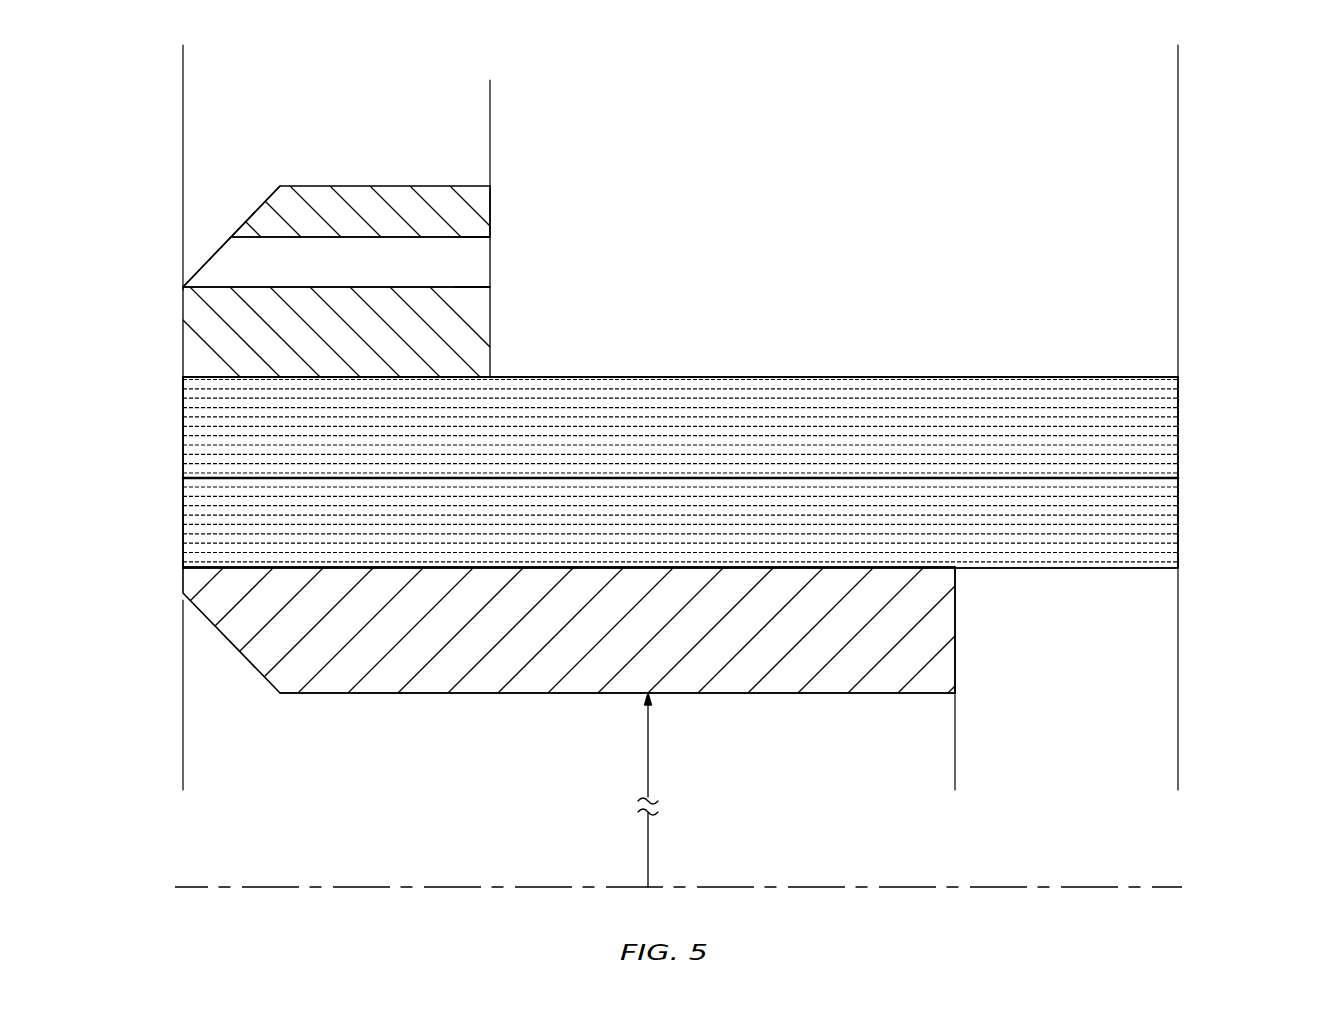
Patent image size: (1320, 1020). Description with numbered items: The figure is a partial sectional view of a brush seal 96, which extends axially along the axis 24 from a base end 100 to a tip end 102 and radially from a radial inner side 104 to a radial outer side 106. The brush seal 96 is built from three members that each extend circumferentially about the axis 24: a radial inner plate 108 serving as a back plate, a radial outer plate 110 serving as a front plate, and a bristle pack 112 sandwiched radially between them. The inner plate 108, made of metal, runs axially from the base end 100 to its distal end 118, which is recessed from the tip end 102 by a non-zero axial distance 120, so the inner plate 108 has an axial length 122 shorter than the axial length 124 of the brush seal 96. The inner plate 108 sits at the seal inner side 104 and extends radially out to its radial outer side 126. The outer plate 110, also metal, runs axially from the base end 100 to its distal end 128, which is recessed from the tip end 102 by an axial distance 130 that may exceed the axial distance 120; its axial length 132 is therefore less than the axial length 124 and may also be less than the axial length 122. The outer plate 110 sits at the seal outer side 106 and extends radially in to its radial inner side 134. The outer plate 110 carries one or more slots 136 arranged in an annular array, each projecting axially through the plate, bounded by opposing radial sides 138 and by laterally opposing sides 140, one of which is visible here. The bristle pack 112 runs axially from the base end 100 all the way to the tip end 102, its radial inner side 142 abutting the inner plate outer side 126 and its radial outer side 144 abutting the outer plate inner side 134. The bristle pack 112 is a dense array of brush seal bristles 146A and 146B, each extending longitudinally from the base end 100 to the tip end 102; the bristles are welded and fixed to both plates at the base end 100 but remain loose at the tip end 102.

The axis 24 is at (275, 882).
The brush seal 96 is at (946, 278).
The base end 100 is at (183, 418).
The tip end 102 is at (1178, 410).
The radial inner side 104 is at (348, 693).
The radial outer side 106 is at (388, 186).
The radial inner plate 108 is at (540, 641).
The radial outer plate 110 is at (310, 346).
The bristle pack 112 is at (701, 481).
The distal end of the inner plate 118 is at (955, 685).
The axial distance 120 is at (955, 775).
The axial length of the inner plate 122 is at (183, 775).
The axial length of the brush seal 124 is at (1178, 53).
The radial outer side of the inner plate 126 is at (200, 565).
The distal end of the outer plate 128 is at (490, 212).
The axial distance 130 is at (1178, 88).
The axial length of the outer plate 132 is at (183, 88).
The radial inner side of the outer plate 134 is at (200, 378).
The slot 136 is at (335, 276).
The radial sides of the slot 138 is at (458, 287).
The laterally opposing side of the slot 140 is at (237, 265).
The radial inner side of the bristle pack 142 is at (293, 567).
The radial outer side of the bristle pack 144 is at (235, 373).
The brush seal bristle 146A is at (1120, 520).
The brush seal bristle 146B is at (1090, 402).